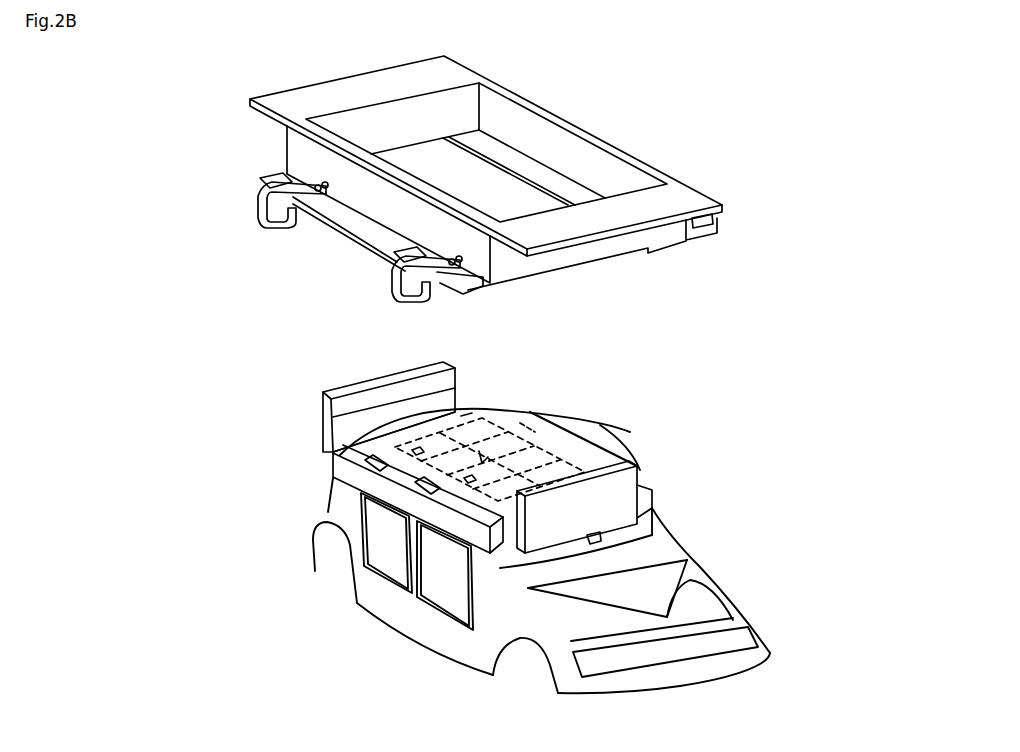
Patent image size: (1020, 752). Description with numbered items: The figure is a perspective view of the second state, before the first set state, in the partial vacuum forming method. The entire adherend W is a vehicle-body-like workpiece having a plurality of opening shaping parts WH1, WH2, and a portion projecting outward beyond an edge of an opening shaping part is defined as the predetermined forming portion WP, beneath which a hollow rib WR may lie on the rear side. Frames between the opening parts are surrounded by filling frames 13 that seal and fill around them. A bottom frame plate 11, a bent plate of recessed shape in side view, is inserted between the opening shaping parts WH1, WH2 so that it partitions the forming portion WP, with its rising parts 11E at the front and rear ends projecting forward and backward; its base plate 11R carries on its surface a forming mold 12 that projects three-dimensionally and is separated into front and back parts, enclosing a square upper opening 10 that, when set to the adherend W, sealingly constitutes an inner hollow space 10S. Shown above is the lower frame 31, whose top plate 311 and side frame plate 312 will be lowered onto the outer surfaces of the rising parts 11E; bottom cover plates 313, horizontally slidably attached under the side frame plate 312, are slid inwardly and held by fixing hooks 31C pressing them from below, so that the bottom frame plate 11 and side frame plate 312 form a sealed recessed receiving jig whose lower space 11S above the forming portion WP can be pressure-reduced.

The lower frame 31 is at (157, 80).
The top plate 311 is at (297, 100).
The side frame plate 312 is at (293, 147).
The bottom cover plates 313 is at (658, 246).
The fixing hooks 31C is at (392, 278).
The lower space 11S is at (497, 202).
The bottom frame plate 11 is at (324, 429).
The rising parts 11E is at (385, 377).
The base plate 11R is at (596, 540).
The forming mold 12 is at (372, 504).
The filling frames 13 is at (531, 410).
The upper opening 10 is at (567, 401).
The hollow space 10S is at (466, 412).
The forming portion WP is at (471, 414).
The hollow rib WR is at (540, 412).
The adherend W is at (737, 593).
The opening shaping part WH1 is at (652, 537).
The opening shaping part WH2 is at (435, 541).